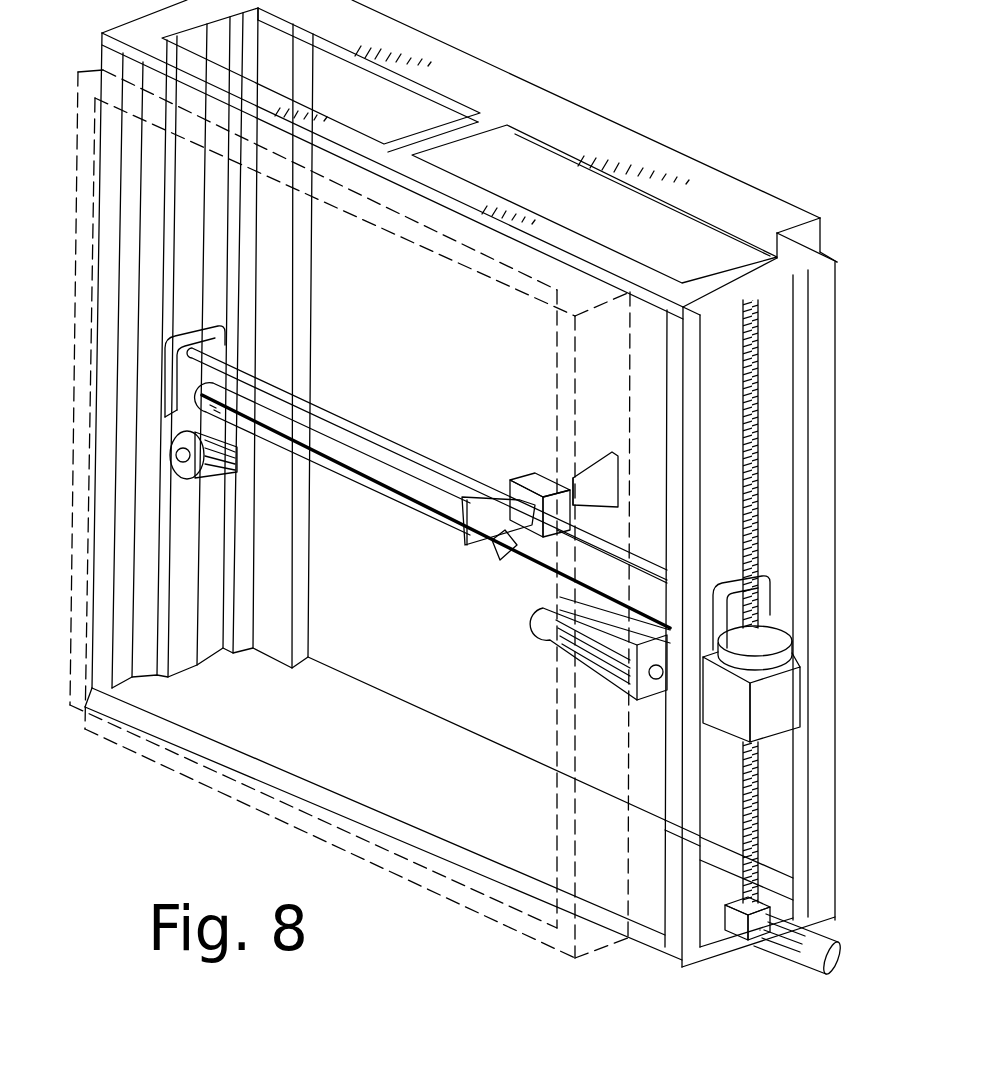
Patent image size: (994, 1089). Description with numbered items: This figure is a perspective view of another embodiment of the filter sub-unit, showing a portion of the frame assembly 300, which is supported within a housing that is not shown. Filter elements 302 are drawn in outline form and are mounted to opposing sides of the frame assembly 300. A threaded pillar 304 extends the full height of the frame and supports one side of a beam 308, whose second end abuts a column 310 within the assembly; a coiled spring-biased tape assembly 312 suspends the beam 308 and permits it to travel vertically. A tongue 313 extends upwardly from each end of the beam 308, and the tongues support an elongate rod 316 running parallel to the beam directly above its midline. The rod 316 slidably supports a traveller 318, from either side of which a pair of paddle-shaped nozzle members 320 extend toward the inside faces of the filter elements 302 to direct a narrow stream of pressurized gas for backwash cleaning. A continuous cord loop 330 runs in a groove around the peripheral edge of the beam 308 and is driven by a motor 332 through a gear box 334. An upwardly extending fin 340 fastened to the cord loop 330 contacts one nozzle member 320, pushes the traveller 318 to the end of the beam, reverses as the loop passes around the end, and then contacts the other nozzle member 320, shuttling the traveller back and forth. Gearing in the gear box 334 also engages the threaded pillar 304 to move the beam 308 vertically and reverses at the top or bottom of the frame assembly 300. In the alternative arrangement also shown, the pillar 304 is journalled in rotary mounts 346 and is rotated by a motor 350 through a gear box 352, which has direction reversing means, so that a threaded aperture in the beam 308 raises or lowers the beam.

The frame assembly 300 is at (836, 540).
The filter elements 302 is at (213, 778).
The threaded pillar 304 is at (757, 828).
The beam 308 is at (372, 508).
The column 310 is at (178, 217).
The coiled spring-biased tape assembly 312 is at (200, 257).
The tongue 313 is at (175, 375).
The elongate rod 316 is at (332, 412).
The traveller 318 is at (547, 500).
The paddle-shaped nozzle members 320 is at (597, 473).
The continuous cord loop 330 is at (403, 513).
The motor 332 is at (551, 648).
The gear box 334 is at (782, 702).
The fin 340 is at (505, 557).
The rotary mounts 346 is at (768, 303).
The motor 350 is at (797, 947).
The gear box 352 is at (812, 925).